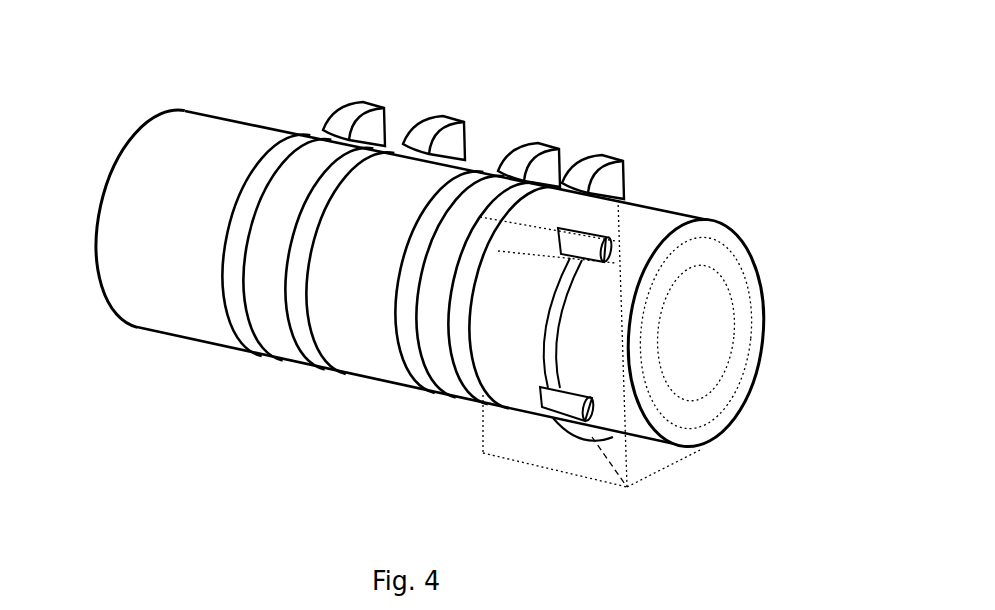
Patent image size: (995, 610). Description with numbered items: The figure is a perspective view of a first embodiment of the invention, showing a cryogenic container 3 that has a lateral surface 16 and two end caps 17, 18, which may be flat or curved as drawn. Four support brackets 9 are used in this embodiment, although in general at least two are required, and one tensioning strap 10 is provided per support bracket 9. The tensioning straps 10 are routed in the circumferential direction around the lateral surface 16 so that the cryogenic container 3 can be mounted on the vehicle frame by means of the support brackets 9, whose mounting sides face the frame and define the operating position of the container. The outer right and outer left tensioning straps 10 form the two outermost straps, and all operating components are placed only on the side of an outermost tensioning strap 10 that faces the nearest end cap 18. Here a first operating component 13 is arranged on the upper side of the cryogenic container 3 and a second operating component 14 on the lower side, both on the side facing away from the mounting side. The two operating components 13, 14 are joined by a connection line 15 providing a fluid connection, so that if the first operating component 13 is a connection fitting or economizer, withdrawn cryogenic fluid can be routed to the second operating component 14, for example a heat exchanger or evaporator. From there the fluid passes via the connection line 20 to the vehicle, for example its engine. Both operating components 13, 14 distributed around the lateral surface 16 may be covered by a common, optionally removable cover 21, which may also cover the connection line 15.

The cryogenic container 3 is at (410, 299).
The support bracket 9 is at (590, 157).
The tensioning strap 10 is at (458, 397).
The first operating component 13 is at (590, 243).
The second operating component 14 is at (557, 402).
The connection line 15 is at (555, 317).
The lateral surface 16 is at (170, 313).
The end cap 17 is at (94, 252).
The end cap 18 is at (702, 405).
The connection line 20 is at (627, 487).
The cover 21 is at (528, 463).